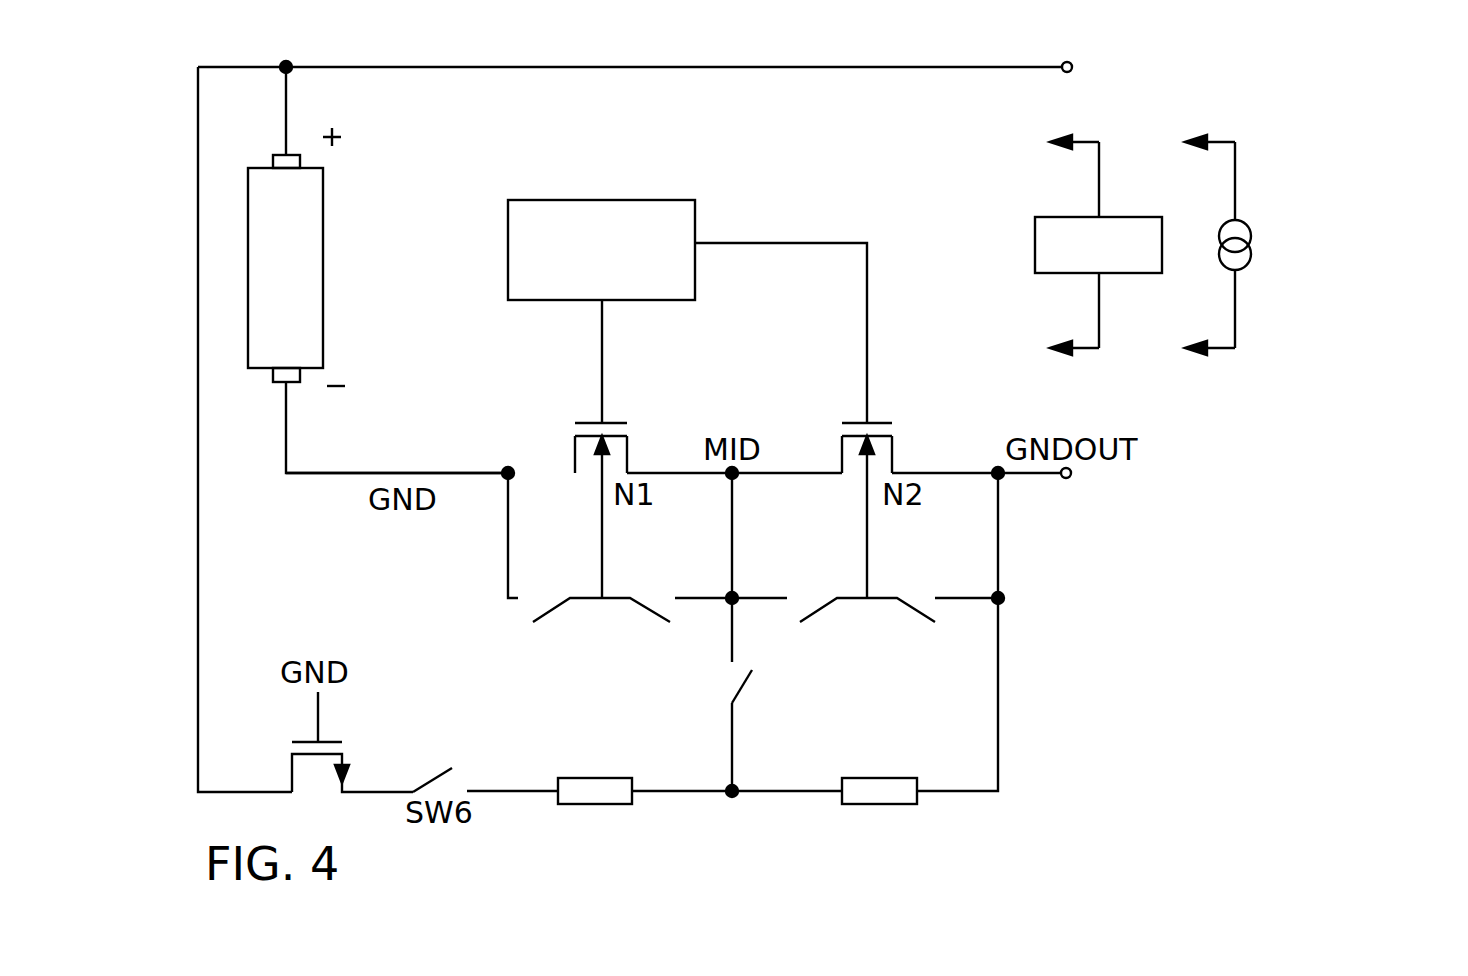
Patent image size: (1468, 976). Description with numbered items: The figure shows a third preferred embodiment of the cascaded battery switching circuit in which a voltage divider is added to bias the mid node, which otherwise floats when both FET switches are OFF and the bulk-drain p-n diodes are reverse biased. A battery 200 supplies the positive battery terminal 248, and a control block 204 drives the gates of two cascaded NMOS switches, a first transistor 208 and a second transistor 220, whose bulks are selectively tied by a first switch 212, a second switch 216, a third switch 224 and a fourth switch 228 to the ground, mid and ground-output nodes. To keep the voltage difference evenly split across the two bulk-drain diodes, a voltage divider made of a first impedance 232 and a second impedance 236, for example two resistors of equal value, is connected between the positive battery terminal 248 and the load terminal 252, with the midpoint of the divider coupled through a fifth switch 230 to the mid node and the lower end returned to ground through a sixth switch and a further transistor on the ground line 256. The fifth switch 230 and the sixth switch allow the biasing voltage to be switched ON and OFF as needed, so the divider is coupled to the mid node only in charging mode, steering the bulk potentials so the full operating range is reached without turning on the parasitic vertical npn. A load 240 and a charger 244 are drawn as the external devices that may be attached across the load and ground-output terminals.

The battery 200 is at (305, 338).
The control circuit 204 is at (642, 200).
The transistor N1 208 is at (612, 423).
The switch SW1 212 is at (550, 613).
The switch SW2 216 is at (648, 612).
The transistor N2 220 is at (880, 423).
The switch SW3 224 is at (818, 609).
The switch SW4 228 is at (928, 618).
The switch SW5 230 is at (744, 680).
The voltage divider impedance Z1 232 is at (610, 804).
The voltage divider impedance Z2 236 is at (895, 804).
The load 240 is at (1055, 265).
The charger 244 is at (1244, 268).
The positive battery terminal VBATT 248 is at (322, 67).
The load terminal GNDOUT 252 is at (1030, 473).
The GND line 256 is at (325, 473).